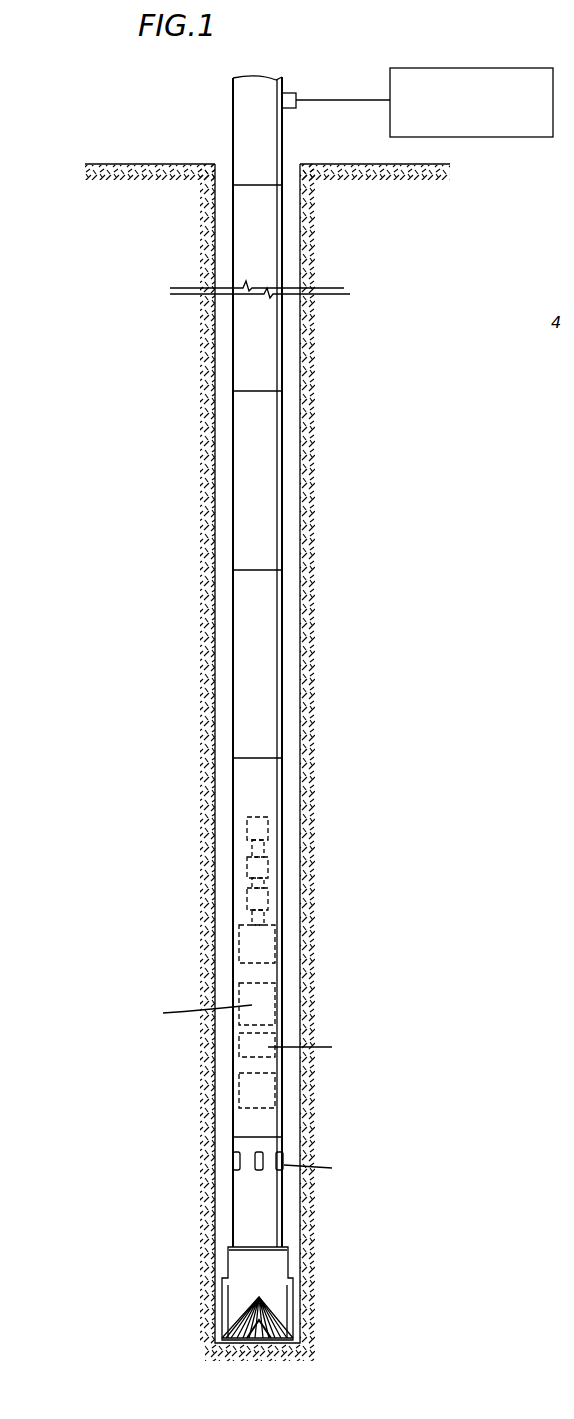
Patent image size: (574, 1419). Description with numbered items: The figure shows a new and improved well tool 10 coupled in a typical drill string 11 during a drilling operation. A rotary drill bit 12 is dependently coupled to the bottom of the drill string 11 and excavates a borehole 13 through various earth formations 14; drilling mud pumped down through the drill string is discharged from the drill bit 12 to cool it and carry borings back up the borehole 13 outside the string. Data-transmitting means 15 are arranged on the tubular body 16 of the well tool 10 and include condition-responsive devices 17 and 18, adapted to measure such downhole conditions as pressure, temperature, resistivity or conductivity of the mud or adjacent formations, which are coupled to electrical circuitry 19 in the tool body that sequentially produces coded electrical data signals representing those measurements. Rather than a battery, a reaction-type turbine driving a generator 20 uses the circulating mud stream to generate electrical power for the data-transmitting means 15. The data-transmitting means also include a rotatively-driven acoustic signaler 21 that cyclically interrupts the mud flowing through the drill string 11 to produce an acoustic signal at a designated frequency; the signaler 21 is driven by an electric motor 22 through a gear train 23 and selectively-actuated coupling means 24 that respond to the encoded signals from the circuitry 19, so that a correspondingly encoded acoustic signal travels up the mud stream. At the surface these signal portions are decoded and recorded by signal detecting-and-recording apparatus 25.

The well tool 10 is at (286, 1004).
The drill string 11 is at (267, 473).
The rotary drill bit 12 is at (282, 1302).
The borehole 13 is at (301, 662).
The earth formations 14 is at (197, 1262).
The data-transmitting means 15 is at (312, 896).
The tubular body 16 is at (273, 1118).
The condition-responsive device 17 is at (284, 1157).
The condition-responsive device 18 is at (258, 1172).
The electrical circuitry 19 is at (225, 979).
The turbine-driven generator 20 is at (243, 1093).
The acoustic signaler 21 is at (267, 830).
The electric motor 22 is at (268, 948).
The gear train 23 is at (247, 899).
The coupling means 24 is at (247, 865).
The signal detecting-and-recording apparatus 25 is at (473, 66).